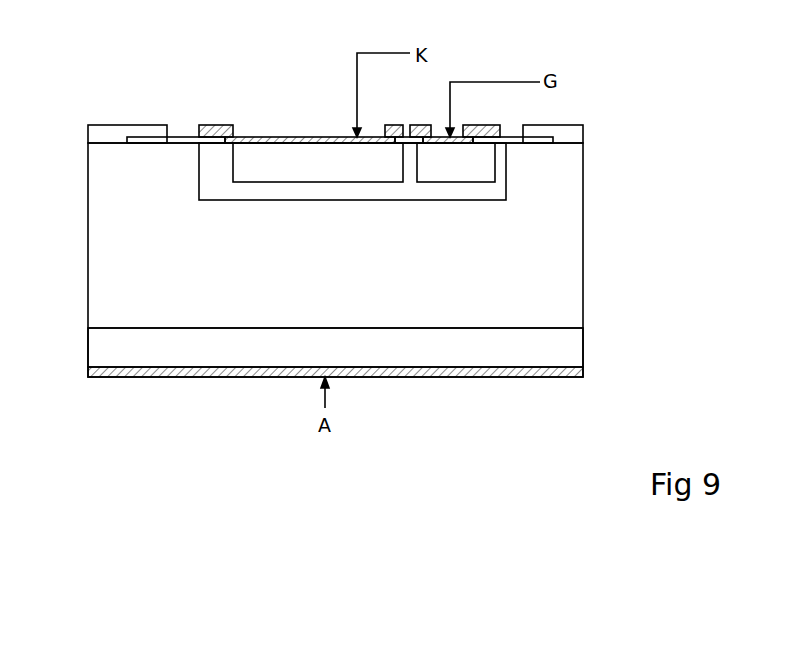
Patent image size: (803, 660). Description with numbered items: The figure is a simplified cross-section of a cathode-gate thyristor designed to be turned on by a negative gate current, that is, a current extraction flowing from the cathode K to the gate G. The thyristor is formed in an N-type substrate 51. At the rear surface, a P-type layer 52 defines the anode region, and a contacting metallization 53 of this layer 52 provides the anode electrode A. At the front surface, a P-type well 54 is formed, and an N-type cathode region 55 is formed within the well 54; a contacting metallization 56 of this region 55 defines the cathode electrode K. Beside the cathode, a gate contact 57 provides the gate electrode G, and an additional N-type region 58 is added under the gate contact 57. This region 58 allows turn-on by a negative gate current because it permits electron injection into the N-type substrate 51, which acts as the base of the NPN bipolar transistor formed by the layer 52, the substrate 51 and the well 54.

The N-type substrate 51 is at (562, 266).
The P-type layer 52 is at (562, 348).
The contacting metallization 53 is at (157, 372).
The P-type well 54 is at (212, 189).
The N-type cathode region 55 is at (265, 156).
The contacting metallization 56 is at (317, 137).
The gate contact 57 is at (474, 130).
The N-type region 58 is at (483, 171).